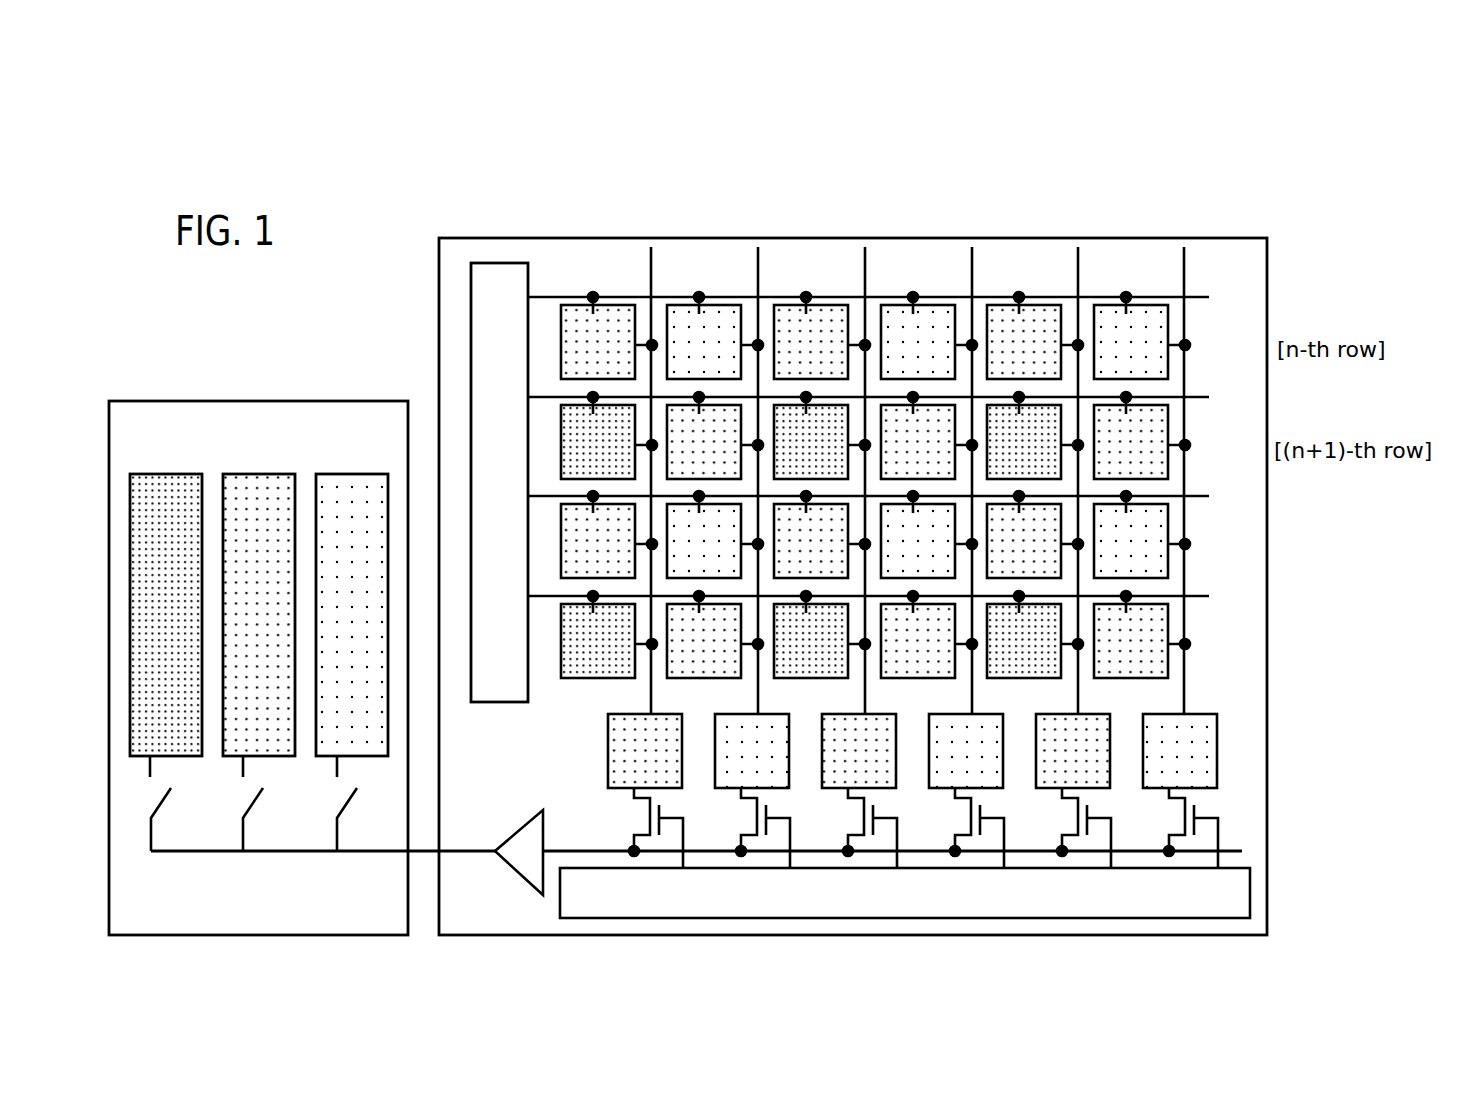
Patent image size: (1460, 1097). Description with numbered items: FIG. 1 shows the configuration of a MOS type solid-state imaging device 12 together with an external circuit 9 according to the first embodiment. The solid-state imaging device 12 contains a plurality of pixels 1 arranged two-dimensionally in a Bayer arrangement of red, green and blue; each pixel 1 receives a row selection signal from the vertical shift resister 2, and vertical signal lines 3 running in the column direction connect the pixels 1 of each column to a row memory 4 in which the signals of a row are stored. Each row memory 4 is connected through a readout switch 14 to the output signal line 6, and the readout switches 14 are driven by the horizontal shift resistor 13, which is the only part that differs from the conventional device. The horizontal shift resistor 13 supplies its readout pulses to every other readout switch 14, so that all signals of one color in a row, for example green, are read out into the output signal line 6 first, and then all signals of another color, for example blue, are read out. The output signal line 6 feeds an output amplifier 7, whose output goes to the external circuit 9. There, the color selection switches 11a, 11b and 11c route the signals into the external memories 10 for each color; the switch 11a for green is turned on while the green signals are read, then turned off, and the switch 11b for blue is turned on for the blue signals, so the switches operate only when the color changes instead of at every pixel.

The pixel 1 is at (1168, 566).
The vertical shift resister 2 is at (508, 263).
The vertical signal line 3 is at (645, 272).
The row memory 4 is at (714, 738).
The output signal line 6 is at (607, 846).
The output amplifier 7 is at (521, 824).
The external circuit 9 is at (333, 401).
The external memory 10 is at (357, 474).
The color selection switch 11a is at (264, 806).
The color selection switch 11b is at (357, 806).
The color selection switch 11c is at (172, 806).
The solid-state imaging device 12 is at (1267, 779).
The horizontal shift resistor 13 is at (1241, 882).
The readout switch 14 is at (752, 818).